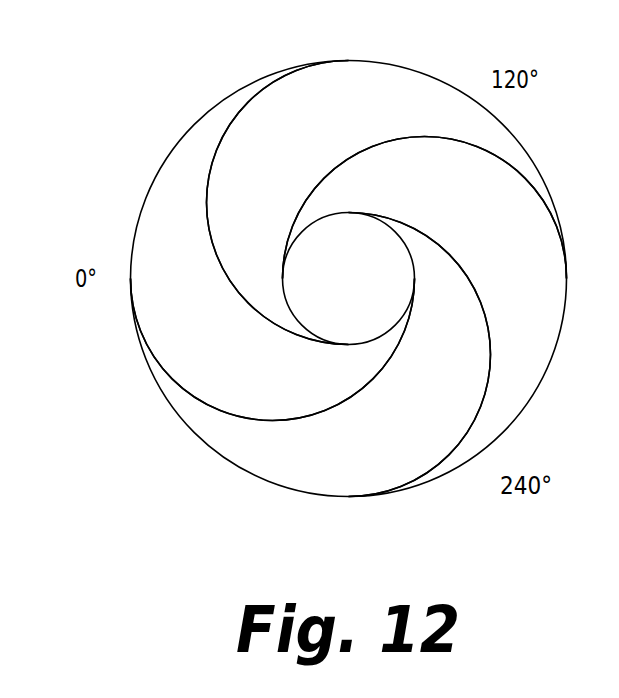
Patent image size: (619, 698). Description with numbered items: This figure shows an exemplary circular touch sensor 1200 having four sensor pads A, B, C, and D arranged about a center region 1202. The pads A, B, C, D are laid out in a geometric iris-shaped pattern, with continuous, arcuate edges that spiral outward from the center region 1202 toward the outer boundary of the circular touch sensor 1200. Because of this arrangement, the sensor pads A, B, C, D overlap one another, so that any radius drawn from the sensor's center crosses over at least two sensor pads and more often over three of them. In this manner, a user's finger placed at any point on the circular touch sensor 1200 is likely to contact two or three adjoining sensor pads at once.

The circular touch sensor 1200 is at (300, 253).
The center region 1202 is at (382, 290).
The pad A is at (387, 203).
The pad B is at (425, 317).
The pad C is at (311, 355).
The pad D is at (273, 241).